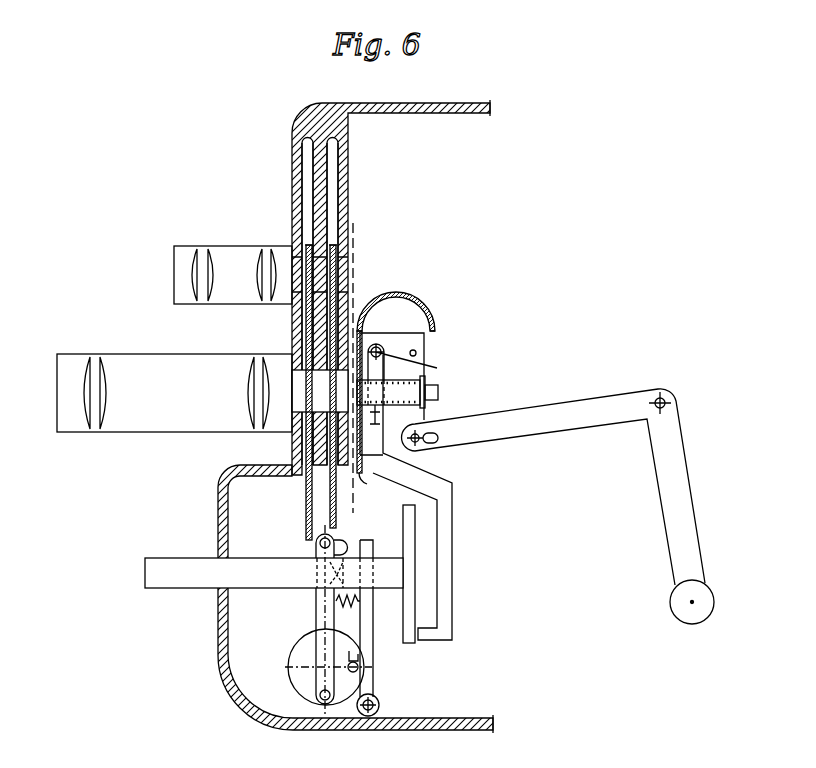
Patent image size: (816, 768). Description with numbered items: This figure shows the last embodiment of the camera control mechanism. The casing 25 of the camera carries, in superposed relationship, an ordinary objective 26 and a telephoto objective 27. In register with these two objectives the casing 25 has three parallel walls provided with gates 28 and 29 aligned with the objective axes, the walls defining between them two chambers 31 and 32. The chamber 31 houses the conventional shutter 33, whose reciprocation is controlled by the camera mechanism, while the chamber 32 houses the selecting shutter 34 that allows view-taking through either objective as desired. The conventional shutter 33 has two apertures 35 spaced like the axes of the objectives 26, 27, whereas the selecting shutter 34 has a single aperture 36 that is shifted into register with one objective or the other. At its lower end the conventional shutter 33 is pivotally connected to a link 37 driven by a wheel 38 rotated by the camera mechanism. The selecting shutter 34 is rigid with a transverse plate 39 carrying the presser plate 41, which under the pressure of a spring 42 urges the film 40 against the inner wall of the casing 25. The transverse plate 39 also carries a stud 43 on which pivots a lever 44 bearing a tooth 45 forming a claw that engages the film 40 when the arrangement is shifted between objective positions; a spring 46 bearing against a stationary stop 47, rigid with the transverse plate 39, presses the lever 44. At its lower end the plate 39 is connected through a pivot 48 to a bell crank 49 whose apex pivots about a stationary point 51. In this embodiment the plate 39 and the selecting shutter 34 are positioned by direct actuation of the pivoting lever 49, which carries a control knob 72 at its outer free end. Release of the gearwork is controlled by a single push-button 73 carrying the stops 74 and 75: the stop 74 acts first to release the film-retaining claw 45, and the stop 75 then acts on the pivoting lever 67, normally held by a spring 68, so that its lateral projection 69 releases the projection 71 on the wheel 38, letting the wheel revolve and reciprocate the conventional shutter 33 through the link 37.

The casing 25 is at (314, 122).
The ordinary objective 26 is at (220, 253).
The telephoto objective 27 is at (140, 354).
The gate 28 is at (320, 287).
The gate 29 is at (321, 400).
The chamber 31 is at (306, 163).
The chamber 32 is at (334, 172).
The conventional shutter 33 is at (307, 240).
The selecting shutter 34 is at (334, 240).
The apertures 35 is at (306, 327).
The aperture 36 is at (322, 371).
The link 37 is at (322, 604).
The wheel 38 is at (298, 677).
The transverse plate 39 is at (424, 340).
The film 40 is at (356, 300).
The presser plate 41 is at (420, 300).
The spring 42 is at (397, 378).
The stud 43 is at (377, 347).
The lever 44 is at (410, 478).
The tooth 45 is at (362, 470).
The spring 46 is at (433, 320).
The stationary stop 47 is at (416, 353).
The pivot 48 is at (417, 434).
The bell crank 49 is at (538, 405).
The stationary point 51 is at (661, 398).
The pivoting lever 67 is at (370, 610).
The spring 68 is at (348, 613).
The lateral projection 69 is at (360, 658).
The projection 71 is at (370, 690).
The control knob 72 is at (684, 603).
The push-button 73 is at (176, 558).
The stop 74 is at (404, 528).
The stop 75 is at (322, 567).